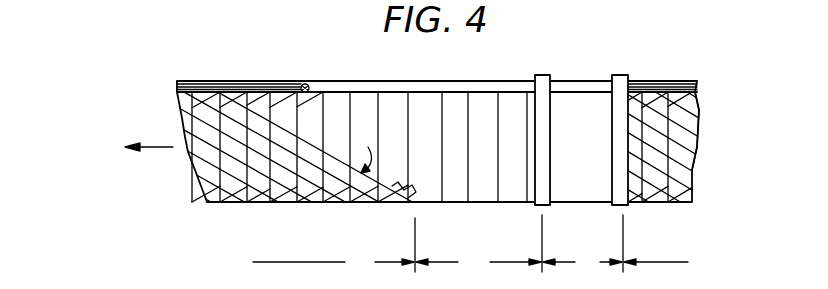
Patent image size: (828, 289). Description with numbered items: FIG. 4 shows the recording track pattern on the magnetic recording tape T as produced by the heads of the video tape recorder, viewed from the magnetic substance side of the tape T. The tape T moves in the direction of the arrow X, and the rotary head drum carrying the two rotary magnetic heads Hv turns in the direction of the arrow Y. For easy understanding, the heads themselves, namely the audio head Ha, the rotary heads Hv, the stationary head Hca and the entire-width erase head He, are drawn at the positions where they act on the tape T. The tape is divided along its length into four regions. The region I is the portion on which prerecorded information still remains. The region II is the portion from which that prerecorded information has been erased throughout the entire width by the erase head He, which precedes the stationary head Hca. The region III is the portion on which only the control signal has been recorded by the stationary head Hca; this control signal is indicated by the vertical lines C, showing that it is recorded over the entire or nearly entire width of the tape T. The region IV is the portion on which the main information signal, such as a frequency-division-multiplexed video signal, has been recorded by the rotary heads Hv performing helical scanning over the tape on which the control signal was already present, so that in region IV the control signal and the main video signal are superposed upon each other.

The control signal track C is at (188, 155).
The magnetic recording tape T is at (698, 100).
The audio head Ha is at (307, 84).
The rotary magnetic heads Hv is at (396, 200).
The stationary head Hca is at (543, 198).
The entire-width erase head He is at (623, 198).
The tape movement direction X is at (152, 147).
The head drum rotating direction Y is at (365, 151).
The region I is at (662, 263).
The region II is at (583, 244).
The region III is at (479, 244).
The region IV is at (334, 245).